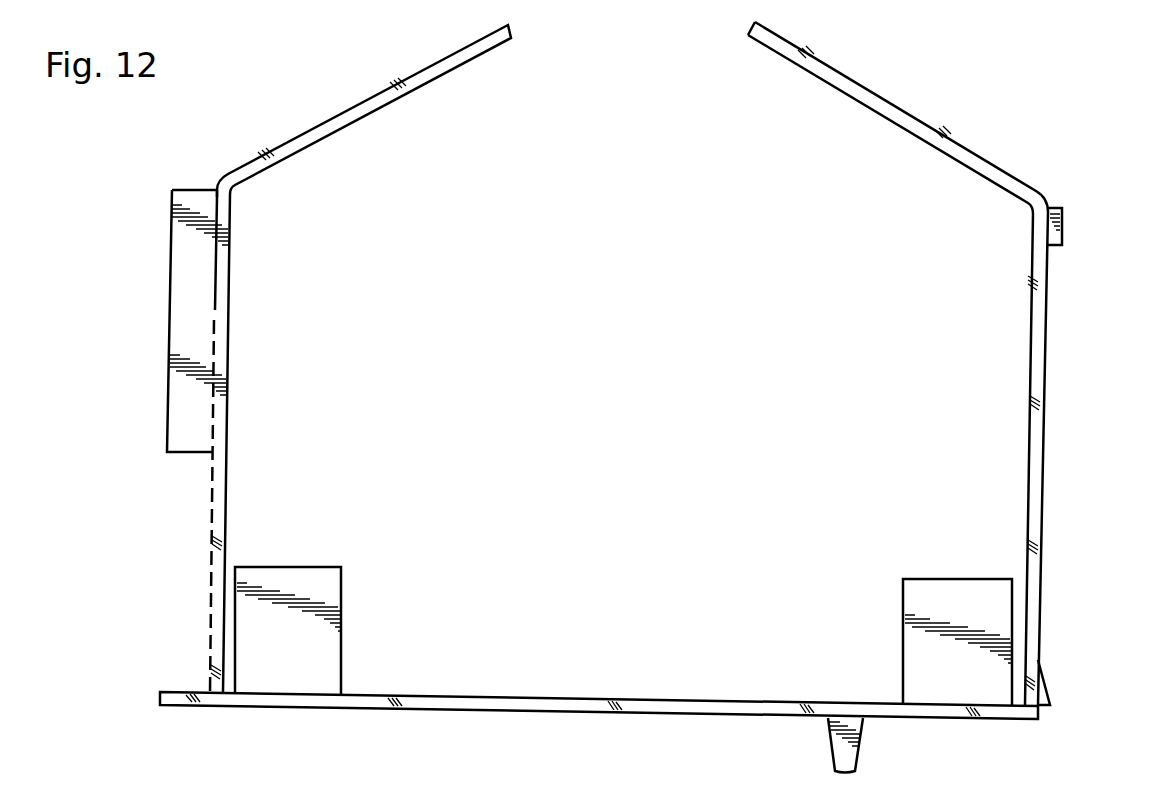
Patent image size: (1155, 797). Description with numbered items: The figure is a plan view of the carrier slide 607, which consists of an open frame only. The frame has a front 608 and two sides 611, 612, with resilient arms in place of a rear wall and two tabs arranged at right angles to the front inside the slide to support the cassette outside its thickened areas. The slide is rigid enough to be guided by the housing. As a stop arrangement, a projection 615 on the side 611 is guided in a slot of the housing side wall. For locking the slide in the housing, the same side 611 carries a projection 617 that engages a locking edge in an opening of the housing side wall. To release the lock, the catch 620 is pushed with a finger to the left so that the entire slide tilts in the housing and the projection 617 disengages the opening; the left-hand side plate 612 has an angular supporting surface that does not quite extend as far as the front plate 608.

The carrier slide 607 is at (593, 699).
The front 608 is at (460, 699).
The side 611 is at (1036, 366).
The side 612 is at (214, 490).
The projection 615 is at (1062, 237).
The projection 617 is at (1045, 698).
The catch 620 is at (855, 765).